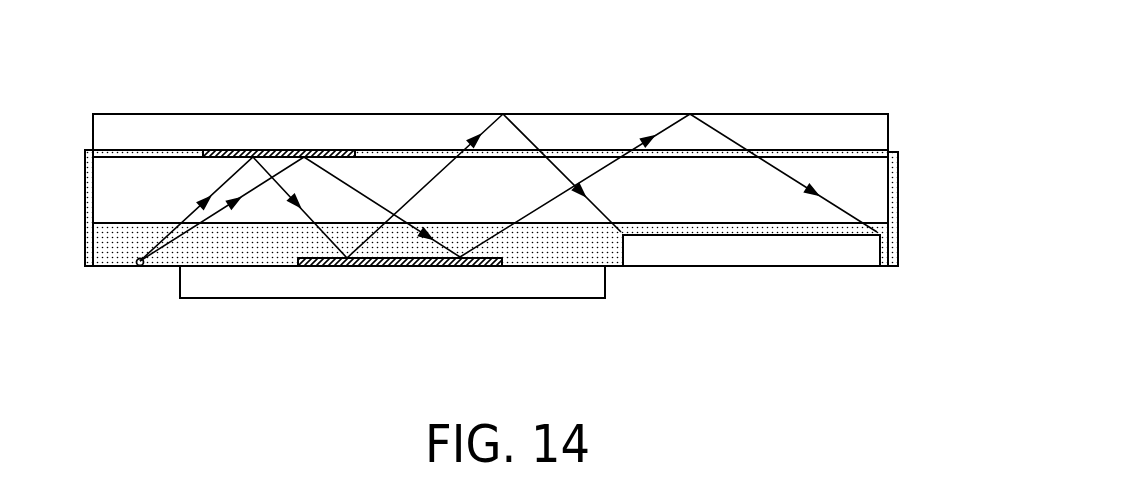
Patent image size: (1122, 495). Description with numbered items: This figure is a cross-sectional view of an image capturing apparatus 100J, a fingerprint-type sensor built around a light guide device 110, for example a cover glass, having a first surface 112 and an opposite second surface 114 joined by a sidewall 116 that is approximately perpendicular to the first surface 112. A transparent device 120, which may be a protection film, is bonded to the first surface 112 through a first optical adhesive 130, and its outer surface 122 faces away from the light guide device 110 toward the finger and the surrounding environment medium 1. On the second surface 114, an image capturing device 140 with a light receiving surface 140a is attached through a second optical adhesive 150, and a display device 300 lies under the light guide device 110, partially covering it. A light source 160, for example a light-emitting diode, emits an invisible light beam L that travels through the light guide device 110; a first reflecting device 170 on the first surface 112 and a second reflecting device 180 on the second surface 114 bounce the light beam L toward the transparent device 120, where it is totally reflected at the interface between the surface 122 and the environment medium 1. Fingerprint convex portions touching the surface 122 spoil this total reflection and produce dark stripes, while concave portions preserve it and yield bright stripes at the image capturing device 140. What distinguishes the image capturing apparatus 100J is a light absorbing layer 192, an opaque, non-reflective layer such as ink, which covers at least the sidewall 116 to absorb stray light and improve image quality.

The environment medium 1 is at (832, 54).
The image capturing apparatus 100J is at (949, 373).
The light guide device 110 is at (872, 193).
The first surface 112 is at (852, 151).
The second surface 114 is at (850, 228).
The sidewall 116 is at (88, 188).
The transparent device 120 is at (880, 125).
The surface 122 is at (849, 106).
The first optical adhesive 130 is at (887, 153).
The image capturing device 140 is at (705, 256).
The light receiving surface 140a is at (721, 230).
The second optical adhesive 150 is at (253, 247).
The light source 160 is at (140, 266).
The first reflecting device 170 is at (281, 150).
The second reflecting device 180 is at (397, 267).
The light absorbing layer 192 is at (85, 232).
The display device 300 is at (573, 282).
The light beam L is at (180, 224).